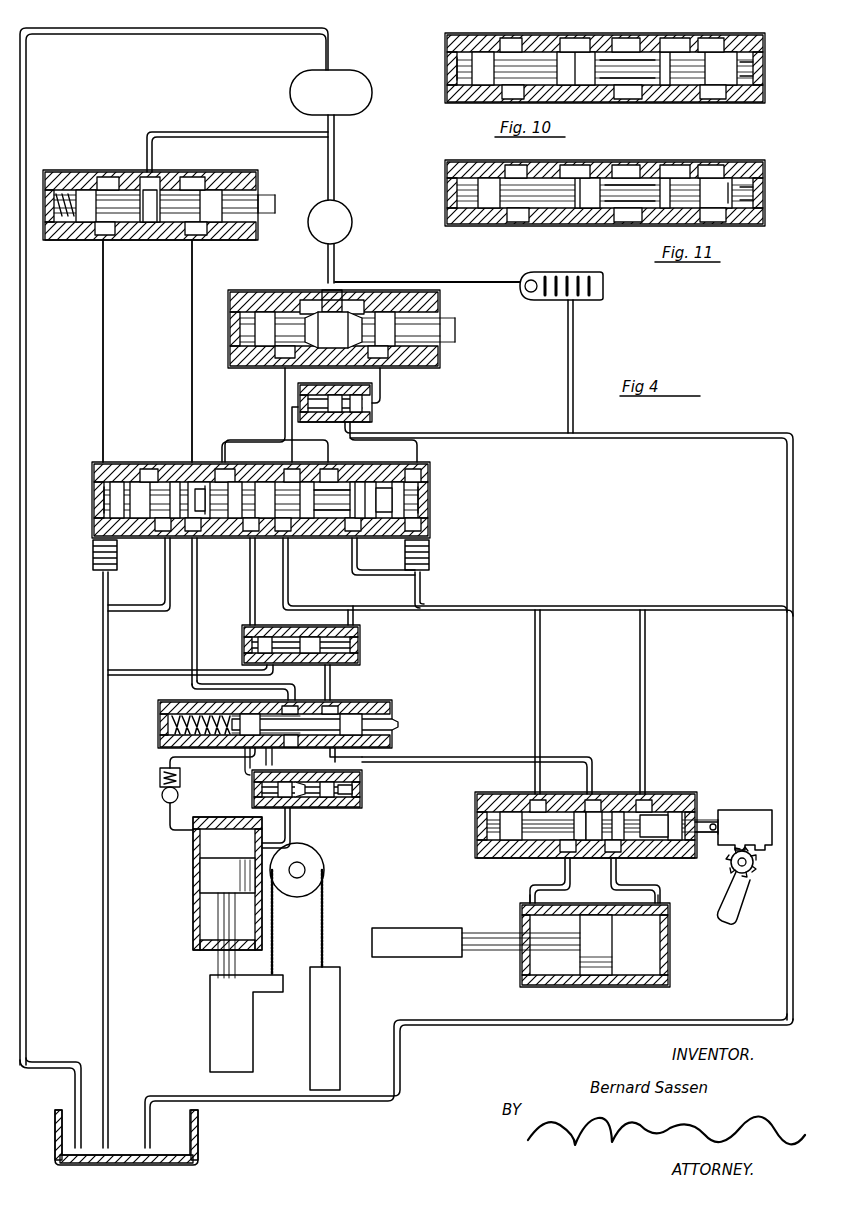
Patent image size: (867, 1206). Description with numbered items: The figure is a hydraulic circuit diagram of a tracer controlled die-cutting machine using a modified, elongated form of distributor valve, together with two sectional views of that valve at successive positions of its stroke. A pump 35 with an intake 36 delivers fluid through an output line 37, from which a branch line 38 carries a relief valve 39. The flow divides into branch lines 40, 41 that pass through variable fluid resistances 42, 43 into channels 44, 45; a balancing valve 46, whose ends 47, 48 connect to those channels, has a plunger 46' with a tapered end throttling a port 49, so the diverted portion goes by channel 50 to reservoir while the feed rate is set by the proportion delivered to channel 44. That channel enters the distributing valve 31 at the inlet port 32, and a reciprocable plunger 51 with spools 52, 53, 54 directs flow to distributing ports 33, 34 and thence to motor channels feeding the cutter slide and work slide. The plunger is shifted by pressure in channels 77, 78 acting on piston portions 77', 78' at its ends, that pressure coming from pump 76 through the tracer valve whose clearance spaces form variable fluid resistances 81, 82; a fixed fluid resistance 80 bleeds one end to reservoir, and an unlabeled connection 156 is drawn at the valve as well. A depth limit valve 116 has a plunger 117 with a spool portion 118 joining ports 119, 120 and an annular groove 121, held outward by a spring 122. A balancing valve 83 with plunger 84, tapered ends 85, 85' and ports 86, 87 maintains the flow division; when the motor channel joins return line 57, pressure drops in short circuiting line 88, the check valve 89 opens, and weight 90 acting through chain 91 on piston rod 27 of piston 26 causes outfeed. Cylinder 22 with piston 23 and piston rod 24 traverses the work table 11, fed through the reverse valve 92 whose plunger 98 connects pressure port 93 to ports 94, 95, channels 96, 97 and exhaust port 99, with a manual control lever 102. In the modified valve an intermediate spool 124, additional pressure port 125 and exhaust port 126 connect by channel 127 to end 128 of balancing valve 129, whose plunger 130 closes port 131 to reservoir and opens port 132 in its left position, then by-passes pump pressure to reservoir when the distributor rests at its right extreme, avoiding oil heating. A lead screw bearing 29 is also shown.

In FIG. 4, the work table 11 is at (432, 957).
In FIG. 4, the cylinder 22 is at (555, 988).
In FIG. 4, the piston 23 is at (600, 960).
In FIG. 4, the piston rod 24 is at (492, 948).
In FIG. 4, the piston 26 is at (200, 878).
In FIG. 4, the piston rod 27 is at (210, 1015).
In FIG. 4, the bearing 29 is at (90, 556).
In FIG. 4, the distributing valve 31 is at (150, 463).
In FIG. 10, the inlet port 32 is at (640, 58).
In FIG. 11, the inlet port 32 is at (652, 183).
In FIG. 4, the inlet port 32 is at (322, 515).
In FIG. 10, the distributing port 33 is at (572, 60).
In FIG. 11, the distributing port 33 is at (600, 215).
In FIG. 4, the distributing port 33 is at (203, 520).
In FIG. 10, the distributing port 34 is at (712, 58).
In FIG. 11, the distributing port 34 is at (708, 188).
In FIG. 4, the distributing port 34 is at (368, 518).
In FIG. 4, the pump 35 is at (352, 223).
In FIG. 4, the intake 36 is at (335, 158).
In FIG. 4, the output line 37 is at (338, 256).
In FIG. 4, the branch line 38 is at (494, 282).
In FIG. 4, the relief valve 39 is at (598, 300).
In FIG. 4, the branch line 40 is at (327, 283).
In FIG. 4, the branch line 41 is at (350, 300).
In FIG. 4, the variable fluid resistance 42 is at (310, 300).
In FIG. 4, the variable fluid resistance 43 is at (365, 310).
In FIG. 4, the channel 44 is at (275, 370).
In FIG. 4, the channel 45 is at (385, 383).
In FIG. 4, the balancing valve 46 is at (278, 434).
In FIG. 4, the valve plunger 46' is at (343, 387).
In FIG. 4, the end of balancing valve 47 is at (318, 395).
In FIG. 4, the end of balancing valve 48 is at (372, 403).
In FIG. 4, the port 49 is at (372, 418).
In FIG. 4, the channel 50 is at (494, 433).
In FIG. 10, the plunger 51 is at (535, 62).
In FIG. 11, the plunger 51 is at (560, 195).
In FIG. 4, the plunger 51 is at (155, 515).
In FIG. 10, the spool 52 is at (577, 62).
In FIG. 11, the spool 52 is at (590, 185).
In FIG. 4, the spool 52 is at (190, 484).
In FIG. 10, the spool 53 is at (668, 62).
In FIG. 11, the spool 53 is at (668, 187).
In FIG. 11, the spool 54 is at (728, 188).
In FIG. 4, the spool 54 is at (375, 485).
In FIG. 4, the return line 57 is at (160, 577).
In FIG. 4, the pump 76 is at (290, 84).
In FIG. 4, the channel 77 is at (86, 351).
In FIG. 10, the piston portion 77' is at (590, 68).
In FIG. 11, the piston portion 77' is at (590, 193).
In FIG. 4, the piston portion 77' is at (82, 500).
In FIG. 4, the channel 78 is at (177, 351).
In FIG. 10, the piston portion 78' is at (766, 67).
In FIG. 11, the piston portion 78' is at (766, 192).
In FIG. 4, the piston portion 78' is at (443, 500).
In FIG. 4, the fixed fluid resistance 80 is at (432, 555).
In FIG. 4, the variable fluid resistance 81 is at (128, 185).
In FIG. 4, the variable fluid resistance 82 is at (170, 185).
In FIG. 4, the balancing valve 83 is at (362, 800).
In FIG. 4, the plunger 84 is at (305, 810).
In FIG. 4, the tapered end 85 is at (362, 818).
In FIG. 4, the tapered end 85' is at (318, 817).
In FIG. 4, the port 86 is at (342, 812).
In FIG. 4, the port 87 is at (255, 802).
In FIG. 4, the short circuiting line 88 is at (160, 757).
In FIG. 4, the check valve 89 is at (180, 796).
In FIG. 4, the weight 90 is at (340, 1002).
In FIG. 4, the chain 91 is at (324, 895).
In FIG. 4, the reverse valve 92 is at (605, 800).
In FIG. 4, the pressure port 93 is at (600, 805).
In FIG. 4, the port 94 is at (568, 870).
In FIG. 4, the port 95 is at (612, 870).
In FIG. 4, the channel 96 is at (532, 888).
In FIG. 4, the channel 97 is at (660, 887).
In FIG. 4, the plunger 98 is at (660, 812).
In FIG. 4, the exhaust port 99 is at (650, 790).
In FIG. 4, the manual control lever 102 is at (740, 903).
In FIG. 4, the depth limit valve 116 is at (240, 700).
In FIG. 4, the plunger 117 is at (398, 718).
In FIG. 4, the spool portion 118 is at (290, 748).
In FIG. 4, the port 119 is at (290, 712).
In FIG. 4, the port 120 is at (260, 748).
In FIG. 4, the annular groove 121 is at (360, 712).
In FIG. 4, the spring 122 is at (160, 722).
In FIG. 4, the intermediate spool 124 is at (208, 520).
In FIG. 4, the additional pressure port 125 is at (210, 445).
In FIG. 4, the exhaust port 126 is at (242, 500).
In FIG. 4, the channel 127 is at (250, 605).
In FIG. 4, the end of balancing valve 128 is at (243, 652).
In FIG. 4, the balancing valve 129 is at (300, 640).
In FIG. 4, the plunger 130 is at (295, 625).
In FIG. 4, the port 131 is at (280, 670).
In FIG. 4, the port 132 is at (345, 668).
In FIG. 4, the conduit 156 is at (358, 568).